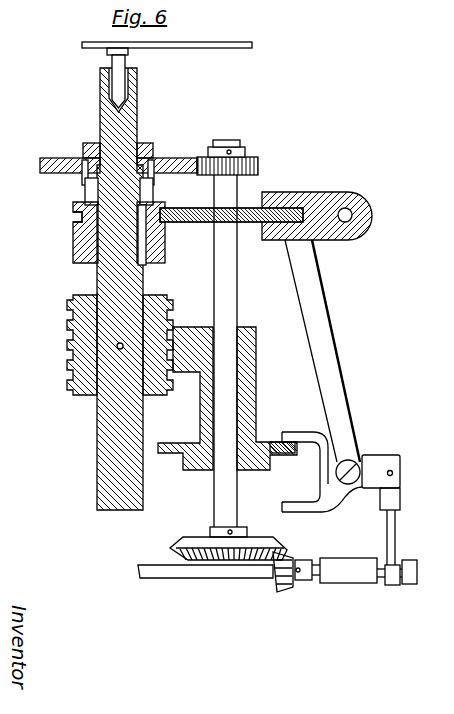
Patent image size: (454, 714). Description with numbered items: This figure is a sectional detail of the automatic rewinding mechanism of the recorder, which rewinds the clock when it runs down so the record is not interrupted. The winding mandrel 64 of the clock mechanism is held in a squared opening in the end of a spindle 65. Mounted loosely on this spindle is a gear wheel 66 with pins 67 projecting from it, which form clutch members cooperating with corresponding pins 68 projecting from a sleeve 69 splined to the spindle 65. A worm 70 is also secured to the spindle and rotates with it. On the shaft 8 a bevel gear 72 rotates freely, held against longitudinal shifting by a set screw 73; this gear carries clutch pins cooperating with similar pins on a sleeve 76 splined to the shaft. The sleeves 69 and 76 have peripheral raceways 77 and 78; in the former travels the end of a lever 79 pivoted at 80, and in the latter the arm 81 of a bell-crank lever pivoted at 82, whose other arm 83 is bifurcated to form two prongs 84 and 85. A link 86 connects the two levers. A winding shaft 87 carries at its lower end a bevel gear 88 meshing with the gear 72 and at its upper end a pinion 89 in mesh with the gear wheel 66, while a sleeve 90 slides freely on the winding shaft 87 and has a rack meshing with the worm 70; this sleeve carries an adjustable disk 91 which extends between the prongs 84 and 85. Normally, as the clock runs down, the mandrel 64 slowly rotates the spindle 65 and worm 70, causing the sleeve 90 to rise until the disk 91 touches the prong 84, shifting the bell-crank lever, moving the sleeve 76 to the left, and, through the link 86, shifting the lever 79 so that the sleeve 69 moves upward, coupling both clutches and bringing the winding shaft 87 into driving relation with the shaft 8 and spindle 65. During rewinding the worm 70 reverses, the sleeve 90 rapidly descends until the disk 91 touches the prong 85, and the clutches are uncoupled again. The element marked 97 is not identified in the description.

The winding mandrel 64 is at (112, 58).
The spindle 65 is at (137, 88).
The gear wheel 66 is at (152, 150).
The pins 67 is at (82, 176).
The pins 68 is at (85, 190).
The sleeve 69 is at (73, 235).
The worm 70 is at (68, 315).
The bevel gear 72 is at (296, 555).
The set screw 73 is at (300, 582).
The sleeve 76 is at (408, 560).
The raceway 77 is at (73, 214).
The raceway 78 is at (395, 585).
The lever 79 is at (202, 222).
The shaft 8 is at (384, 580).
The pivot 80 is at (372, 215).
The arm 81 is at (387, 522).
The pivot 82 is at (393, 473).
The arm 83 is at (372, 488).
The prong 84 is at (292, 428).
The prong 85 is at (322, 472).
The link 86 is at (332, 325).
The winding shaft 87 is at (226, 283).
The bevel gear 88 is at (270, 532).
The pinion 89 is at (262, 163).
The sleeve 90 is at (256, 381).
The disk 91 is at (196, 470).
The frame 97 is at (453, 352).